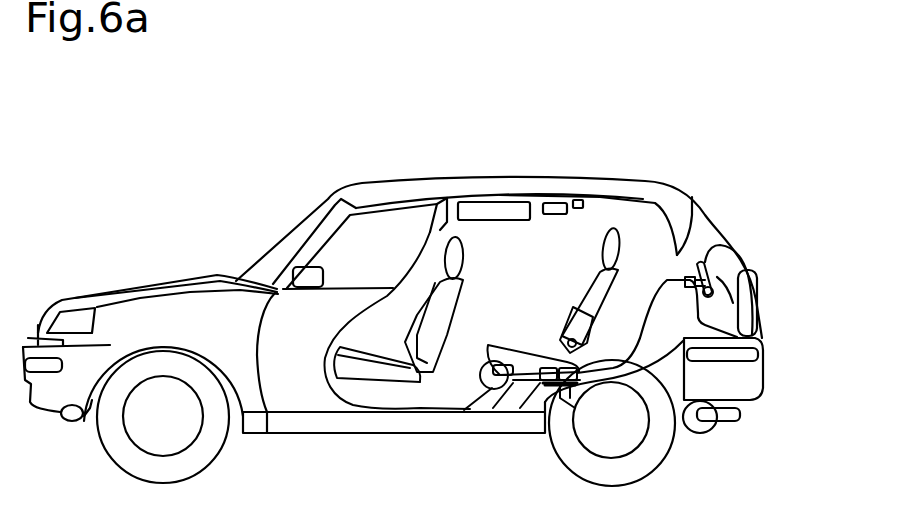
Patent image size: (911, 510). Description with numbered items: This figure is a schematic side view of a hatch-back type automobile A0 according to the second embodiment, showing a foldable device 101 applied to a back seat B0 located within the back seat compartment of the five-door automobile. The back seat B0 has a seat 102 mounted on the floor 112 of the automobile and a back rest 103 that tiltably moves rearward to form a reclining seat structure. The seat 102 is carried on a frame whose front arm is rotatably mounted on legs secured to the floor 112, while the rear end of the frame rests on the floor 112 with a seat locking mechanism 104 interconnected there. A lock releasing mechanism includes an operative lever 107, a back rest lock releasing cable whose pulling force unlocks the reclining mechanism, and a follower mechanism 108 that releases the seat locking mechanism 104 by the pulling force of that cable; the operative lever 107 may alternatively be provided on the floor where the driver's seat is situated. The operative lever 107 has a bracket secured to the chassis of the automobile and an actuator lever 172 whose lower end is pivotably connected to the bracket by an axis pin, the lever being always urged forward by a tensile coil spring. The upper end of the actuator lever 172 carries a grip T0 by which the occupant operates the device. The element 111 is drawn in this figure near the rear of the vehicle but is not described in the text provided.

The foldable device 101 is at (687, 267).
The striker 111 is at (703, 260).
The actuator lever 172 is at (713, 288).
The back rest 103 is at (588, 299).
The operative lever 107 is at (678, 270).
The seat 102 is at (518, 346).
The floor 112 is at (495, 388).
The follower mechanism 108 is at (545, 381).
The seat locking mechanism 104 is at (556, 398).
The hatch-back type automobile A0 is at (245, 261).
The back seat B0 is at (578, 285).
The grip T0 is at (718, 240).